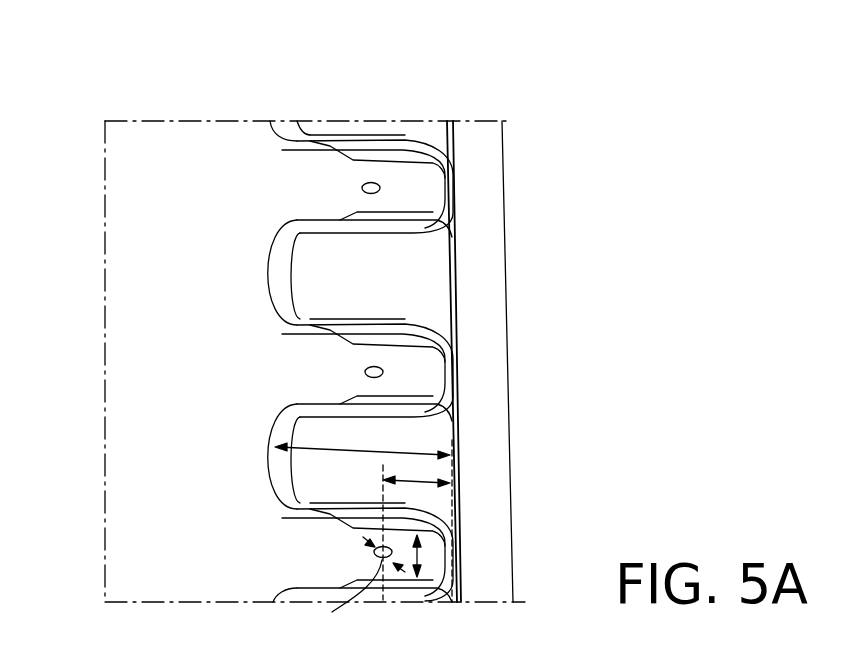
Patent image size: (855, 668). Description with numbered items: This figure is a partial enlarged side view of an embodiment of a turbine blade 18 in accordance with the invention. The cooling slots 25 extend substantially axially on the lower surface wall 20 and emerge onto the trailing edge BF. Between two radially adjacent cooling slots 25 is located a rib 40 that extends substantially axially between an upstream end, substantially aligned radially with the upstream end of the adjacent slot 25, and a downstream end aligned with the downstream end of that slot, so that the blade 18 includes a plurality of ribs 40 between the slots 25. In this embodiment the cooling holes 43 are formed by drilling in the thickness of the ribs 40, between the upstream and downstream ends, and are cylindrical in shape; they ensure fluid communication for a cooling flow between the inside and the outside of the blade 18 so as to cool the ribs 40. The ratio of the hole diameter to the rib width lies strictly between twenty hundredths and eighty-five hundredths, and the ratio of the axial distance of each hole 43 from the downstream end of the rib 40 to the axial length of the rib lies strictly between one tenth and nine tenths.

The blade 18 is at (232, 114).
The lower surface wall 20 is at (165, 268).
The cooling slot 25 is at (410, 268).
The rib 40 is at (330, 355).
The cooling hole 43 is at (372, 181).
The trailing edge BF is at (498, 327).